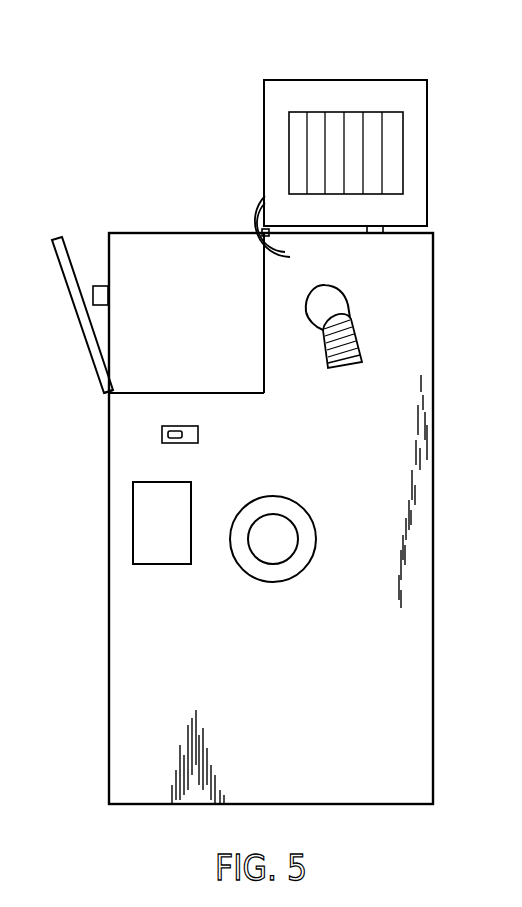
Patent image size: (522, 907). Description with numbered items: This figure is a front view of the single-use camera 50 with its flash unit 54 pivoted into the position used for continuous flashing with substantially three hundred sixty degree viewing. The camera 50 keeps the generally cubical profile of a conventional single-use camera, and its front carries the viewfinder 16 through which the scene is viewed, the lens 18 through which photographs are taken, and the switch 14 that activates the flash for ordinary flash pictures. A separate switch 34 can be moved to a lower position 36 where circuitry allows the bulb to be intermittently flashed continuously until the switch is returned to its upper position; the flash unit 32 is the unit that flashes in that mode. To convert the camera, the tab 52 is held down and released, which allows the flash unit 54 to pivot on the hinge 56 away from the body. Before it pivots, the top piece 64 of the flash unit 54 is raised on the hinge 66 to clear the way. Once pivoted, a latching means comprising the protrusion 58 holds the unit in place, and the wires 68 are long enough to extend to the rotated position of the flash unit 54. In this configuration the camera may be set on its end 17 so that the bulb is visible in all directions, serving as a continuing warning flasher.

The camera 50 is at (148, 184).
The flash unit 54 is at (290, 90).
The flash unit 32 is at (370, 112).
The hinge 56 is at (268, 237).
The protrusion 58 is at (378, 233).
The wires 68 is at (245, 197).
The tab 52 is at (100, 285).
The top piece 64 is at (78, 314).
The hinge 66 is at (105, 394).
The switch 14 is at (352, 365).
The lower position 36 is at (198, 432).
The switch 34 is at (172, 426).
The viewfinder 16 is at (133, 527).
The lens 18 is at (298, 531).
The end 17 is at (158, 804).